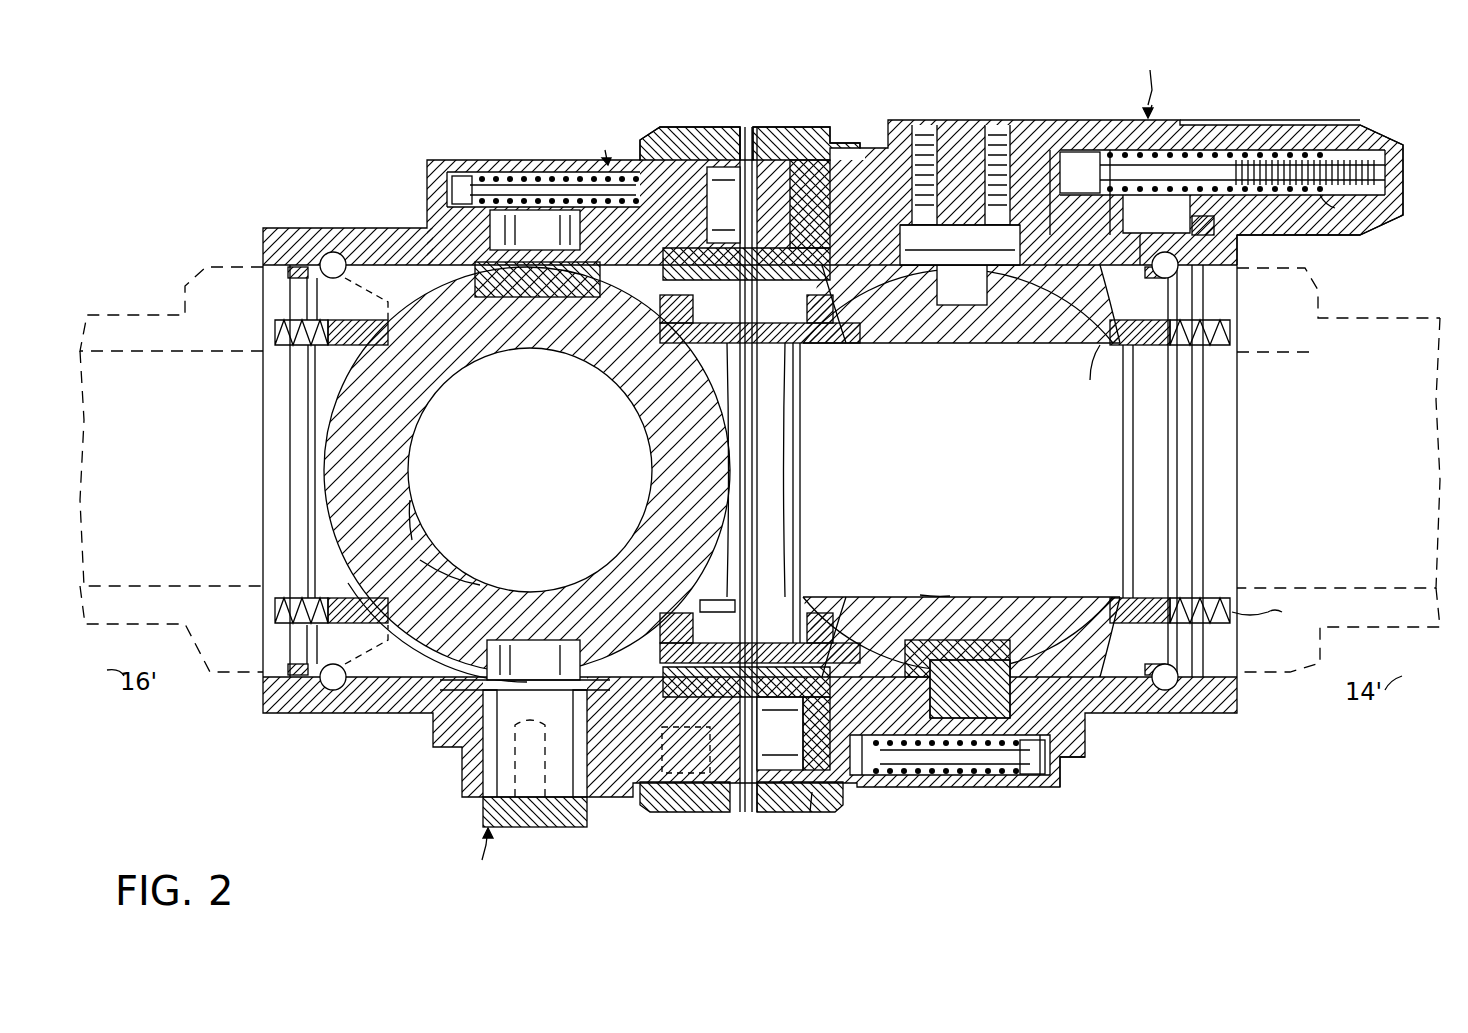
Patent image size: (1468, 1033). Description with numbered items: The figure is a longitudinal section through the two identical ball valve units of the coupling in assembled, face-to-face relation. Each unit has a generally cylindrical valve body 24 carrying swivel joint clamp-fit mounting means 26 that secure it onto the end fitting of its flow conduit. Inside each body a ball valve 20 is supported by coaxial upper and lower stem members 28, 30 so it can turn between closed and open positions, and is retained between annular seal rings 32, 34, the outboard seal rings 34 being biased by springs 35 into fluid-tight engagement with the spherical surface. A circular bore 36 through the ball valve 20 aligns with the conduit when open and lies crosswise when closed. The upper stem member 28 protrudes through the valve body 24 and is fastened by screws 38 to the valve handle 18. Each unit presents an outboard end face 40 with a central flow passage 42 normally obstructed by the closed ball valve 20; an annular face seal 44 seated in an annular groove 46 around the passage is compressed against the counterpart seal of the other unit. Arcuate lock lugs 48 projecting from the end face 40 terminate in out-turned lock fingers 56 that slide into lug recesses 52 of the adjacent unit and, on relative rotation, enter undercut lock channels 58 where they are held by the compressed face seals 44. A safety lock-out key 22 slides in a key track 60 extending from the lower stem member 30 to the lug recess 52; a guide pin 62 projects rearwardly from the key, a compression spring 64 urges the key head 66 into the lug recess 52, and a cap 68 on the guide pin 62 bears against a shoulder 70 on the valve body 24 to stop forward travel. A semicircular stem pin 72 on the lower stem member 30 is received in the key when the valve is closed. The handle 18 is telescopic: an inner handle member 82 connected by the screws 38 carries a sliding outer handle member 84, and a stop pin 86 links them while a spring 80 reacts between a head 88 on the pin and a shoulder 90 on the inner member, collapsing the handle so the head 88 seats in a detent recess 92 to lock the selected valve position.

The valve handle 18 is at (821, 466).
The ball valve 20 is at (345, 445).
The safety lock-out key 22 is at (605, 152).
The valve body 24 is at (1185, 720).
The swivel joint clamp-fit mounting means 26 is at (1240, 336).
The upper stem member 28 is at (500, 750).
The lower stem member 30 is at (530, 297).
The annular seal ring 32 is at (818, 312).
The outboard seal ring 34 is at (440, 560).
The spring 35 is at (1273, 610).
The circular bore 36 is at (410, 510).
The screws 38 is at (995, 125).
The outboard end face 40 is at (780, 240).
The central flow passage 42 is at (660, 330).
The annular face seal 44 is at (735, 600).
The annular groove 46 is at (700, 606).
The lock lug 48 is at (820, 132).
The lug recess 52 is at (750, 814).
The lock finger 56 is at (737, 200).
The lock channel 58 is at (640, 300).
The key track 60 is at (920, 790).
The guide pin 62 is at (515, 185).
The compression spring 64 is at (975, 790).
The head 66 is at (705, 130).
The cap 68 is at (470, 188).
The shoulder 70 is at (1082, 745).
The semicircular stem pin 72 is at (490, 230).
The spring 80 is at (1215, 228).
The inner handle member 82 is at (1190, 128).
The outer handle member 84 is at (1395, 150).
The stop pin 86 is at (1285, 165).
The head 88 is at (1075, 180).
The shoulder 90 is at (1330, 195).
The detent recess 92 is at (1070, 230).